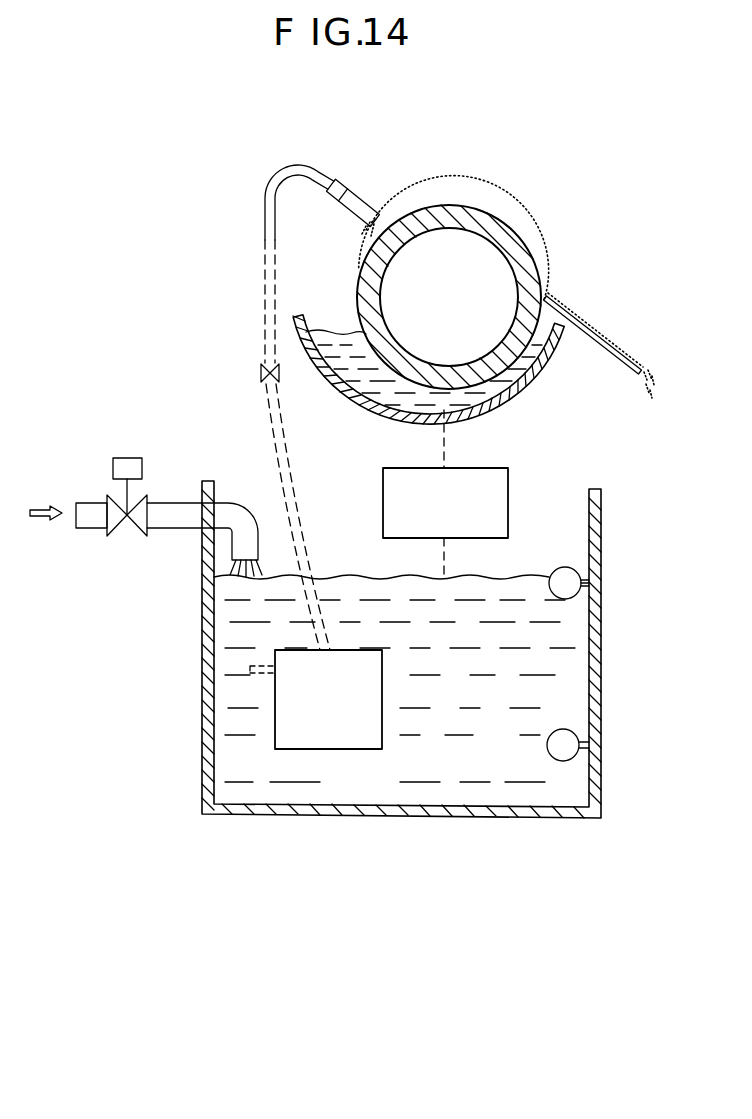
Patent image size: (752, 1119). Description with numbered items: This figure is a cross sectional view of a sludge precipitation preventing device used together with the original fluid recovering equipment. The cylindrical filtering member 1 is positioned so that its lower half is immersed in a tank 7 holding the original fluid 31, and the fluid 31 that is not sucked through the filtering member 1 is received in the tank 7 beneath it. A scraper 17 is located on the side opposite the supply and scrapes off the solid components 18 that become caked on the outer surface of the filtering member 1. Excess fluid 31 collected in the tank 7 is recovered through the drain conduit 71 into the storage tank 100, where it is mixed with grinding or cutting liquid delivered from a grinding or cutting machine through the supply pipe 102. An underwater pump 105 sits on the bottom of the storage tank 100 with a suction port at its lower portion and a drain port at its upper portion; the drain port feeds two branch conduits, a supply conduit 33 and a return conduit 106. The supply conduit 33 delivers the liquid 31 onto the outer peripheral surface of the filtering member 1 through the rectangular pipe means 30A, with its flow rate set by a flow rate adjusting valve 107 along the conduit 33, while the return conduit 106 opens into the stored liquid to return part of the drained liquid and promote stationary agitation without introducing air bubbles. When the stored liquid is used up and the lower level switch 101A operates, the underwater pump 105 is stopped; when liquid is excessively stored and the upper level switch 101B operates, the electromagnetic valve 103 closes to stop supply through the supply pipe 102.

The cylindrical filtering member 1 is at (452, 205).
The tank 7 is at (527, 391).
The scraper 17 is at (628, 373).
The solid components 18 is at (538, 250).
The rectangular pipe means 30A is at (364, 201).
The original fluid 31 is at (372, 222).
The supply conduit 33 is at (318, 168).
The drain conduit 71 is at (420, 467).
The storage tank 100 is at (498, 820).
The lower level switch 101A is at (580, 735).
The upper level switch 101B is at (578, 570).
The supply pipe 102 is at (177, 502).
The electromagnetic valve 103 is at (130, 457).
The underwater pump 105 is at (361, 750).
The return conduit 106 is at (250, 668).
The flow rate adjusting valve 107 is at (262, 366).